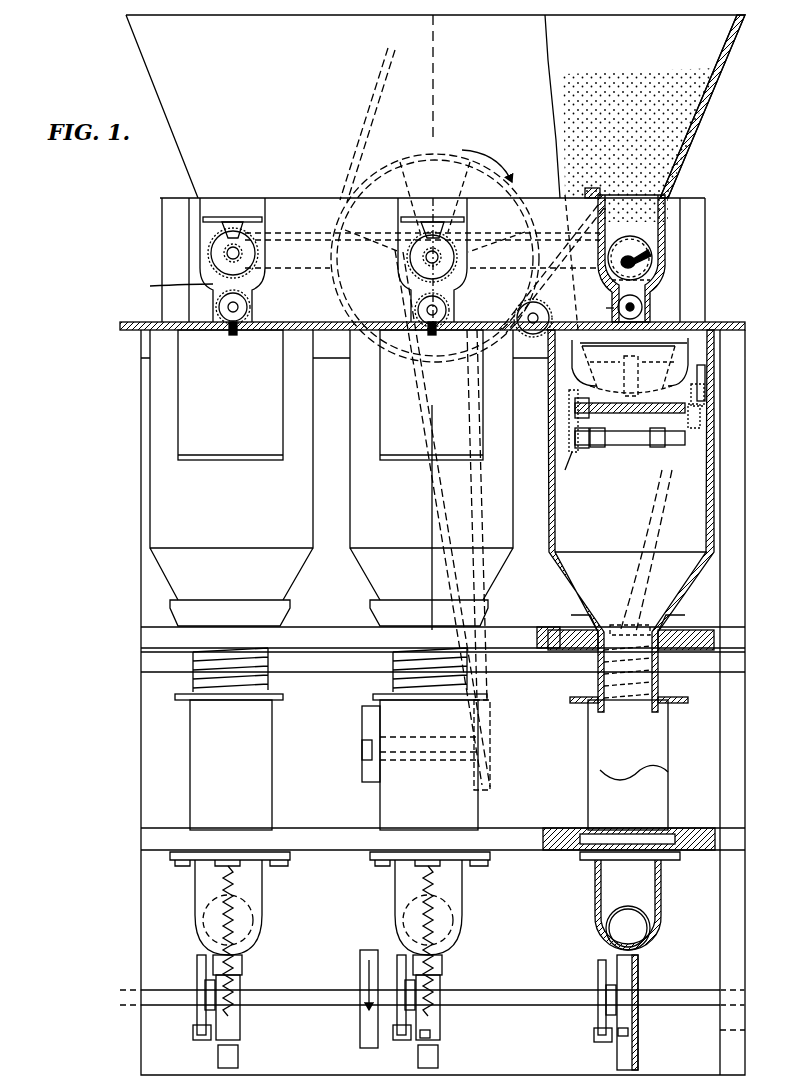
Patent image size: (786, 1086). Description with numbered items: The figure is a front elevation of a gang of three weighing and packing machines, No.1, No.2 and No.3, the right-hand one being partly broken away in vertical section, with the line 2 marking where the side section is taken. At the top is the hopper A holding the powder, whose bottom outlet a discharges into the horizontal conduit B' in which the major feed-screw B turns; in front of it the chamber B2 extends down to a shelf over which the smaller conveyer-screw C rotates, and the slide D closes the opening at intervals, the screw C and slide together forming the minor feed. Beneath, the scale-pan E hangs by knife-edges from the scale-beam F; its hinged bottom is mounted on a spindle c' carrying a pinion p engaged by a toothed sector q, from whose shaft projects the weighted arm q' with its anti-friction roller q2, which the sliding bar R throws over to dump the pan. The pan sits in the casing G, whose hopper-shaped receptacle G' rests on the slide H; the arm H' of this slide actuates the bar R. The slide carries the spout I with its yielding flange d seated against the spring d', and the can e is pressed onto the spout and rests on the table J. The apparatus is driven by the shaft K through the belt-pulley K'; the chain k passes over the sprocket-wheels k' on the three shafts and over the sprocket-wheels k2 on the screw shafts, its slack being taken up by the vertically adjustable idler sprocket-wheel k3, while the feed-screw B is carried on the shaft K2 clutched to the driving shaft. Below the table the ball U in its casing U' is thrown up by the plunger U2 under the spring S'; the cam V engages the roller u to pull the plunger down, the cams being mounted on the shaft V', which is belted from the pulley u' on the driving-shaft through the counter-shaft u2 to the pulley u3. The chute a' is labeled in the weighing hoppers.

The hopper A is at (435, 106).
The section line 2 is at (428, 165).
The bottom outlet a is at (639, 145).
The chute a' is at (378, 497).
The shaft K is at (333, 254).
The belt-pulley K' is at (435, 250).
The shaft K2 is at (652, 252).
The chain k is at (368, 281).
The sprocket-wheel k' is at (438, 273).
The sprocket-wheel k2 is at (250, 307).
The idler sprocket-wheel k3 is at (533, 329).
The pulley u' is at (415, 419).
The feed-screw B is at (618, 255).
The conduit B' is at (552, 268).
The chamber B2 is at (615, 289).
The conveyer-screw C is at (602, 306).
The slide D is at (633, 344).
The scale-pan E is at (628, 371).
The scale-beam F is at (572, 372).
The sliding bar R is at (705, 385).
The toothed sector q is at (569, 421).
The weighted arm q' is at (677, 408).
The anti-friction roller q2 is at (704, 400).
The pinion p is at (570, 462).
The spindle c' is at (630, 440).
The machine No.1 is at (231, 465).
The machine No.2 is at (431, 465).
The machine No.3 is at (631, 521).
The casing G is at (603, 349).
The receptacle G' is at (658, 582).
The slide H is at (622, 621).
The arm H' is at (651, 551).
The spout I is at (225, 700).
The yielding flange d is at (443, 703).
The spring d' is at (481, 679).
The can e is at (429, 765).
The counter-shaft u2 is at (410, 744).
The table J is at (443, 838).
The spring S' is at (344, 938).
The ball U is at (628, 928).
The casing U' is at (572, 905).
The plunger U2 is at (238, 1055).
The cam V is at (399, 994).
The shaft V' is at (432, 1001).
The roller u is at (511, 1044).
The pulley u3 is at (355, 999).